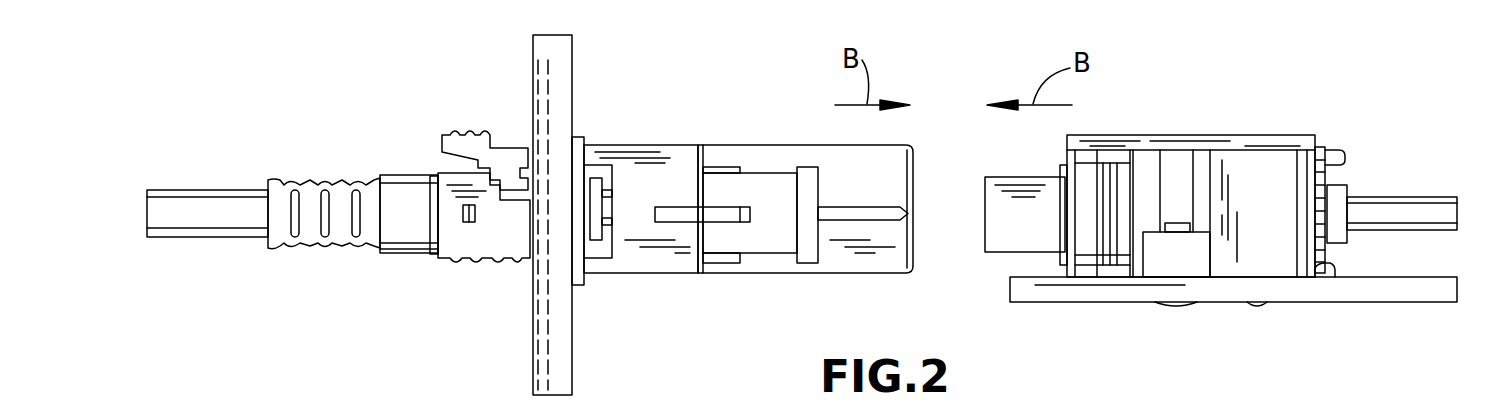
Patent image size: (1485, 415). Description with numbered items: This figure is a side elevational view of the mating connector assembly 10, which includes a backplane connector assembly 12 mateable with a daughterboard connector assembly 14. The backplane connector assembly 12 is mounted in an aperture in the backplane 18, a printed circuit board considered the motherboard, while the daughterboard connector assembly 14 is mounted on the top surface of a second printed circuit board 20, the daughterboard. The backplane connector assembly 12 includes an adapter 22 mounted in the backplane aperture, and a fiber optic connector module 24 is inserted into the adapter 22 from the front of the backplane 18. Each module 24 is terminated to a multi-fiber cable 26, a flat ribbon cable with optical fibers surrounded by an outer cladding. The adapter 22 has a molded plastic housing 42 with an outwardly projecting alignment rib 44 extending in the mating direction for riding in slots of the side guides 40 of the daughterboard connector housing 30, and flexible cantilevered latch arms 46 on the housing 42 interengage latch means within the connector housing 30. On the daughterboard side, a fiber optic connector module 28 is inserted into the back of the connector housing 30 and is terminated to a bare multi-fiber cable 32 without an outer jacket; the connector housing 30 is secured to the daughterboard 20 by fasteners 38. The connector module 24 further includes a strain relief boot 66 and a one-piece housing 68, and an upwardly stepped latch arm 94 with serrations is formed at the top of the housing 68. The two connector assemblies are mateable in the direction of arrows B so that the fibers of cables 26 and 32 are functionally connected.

The mating connector assembly 10 is at (958, 56).
The backplane connector assembly 12 is at (742, 201).
The daughterboard connector assembly 14 is at (1204, 209).
The backplane 18 is at (555, 62).
The second printed circuit board 20 is at (1358, 288).
The adapter 22 is at (703, 293).
The fiber optic connector module 24 is at (457, 285).
The multi-fiber cable 26 is at (230, 213).
The fiber optic connector module 28 is at (1348, 141).
The connector housing 30 is at (1248, 245).
The multi-fiber cable 32 is at (1362, 197).
The fasteners 38 is at (1177, 230).
The guides 40 is at (1010, 225).
The housing 42 is at (660, 255).
The alignment rib 44 is at (872, 213).
The latch arms 46 is at (780, 230).
The strain relief boot 66 is at (408, 230).
The housing 68 is at (516, 262).
The latch arm 94 is at (512, 150).